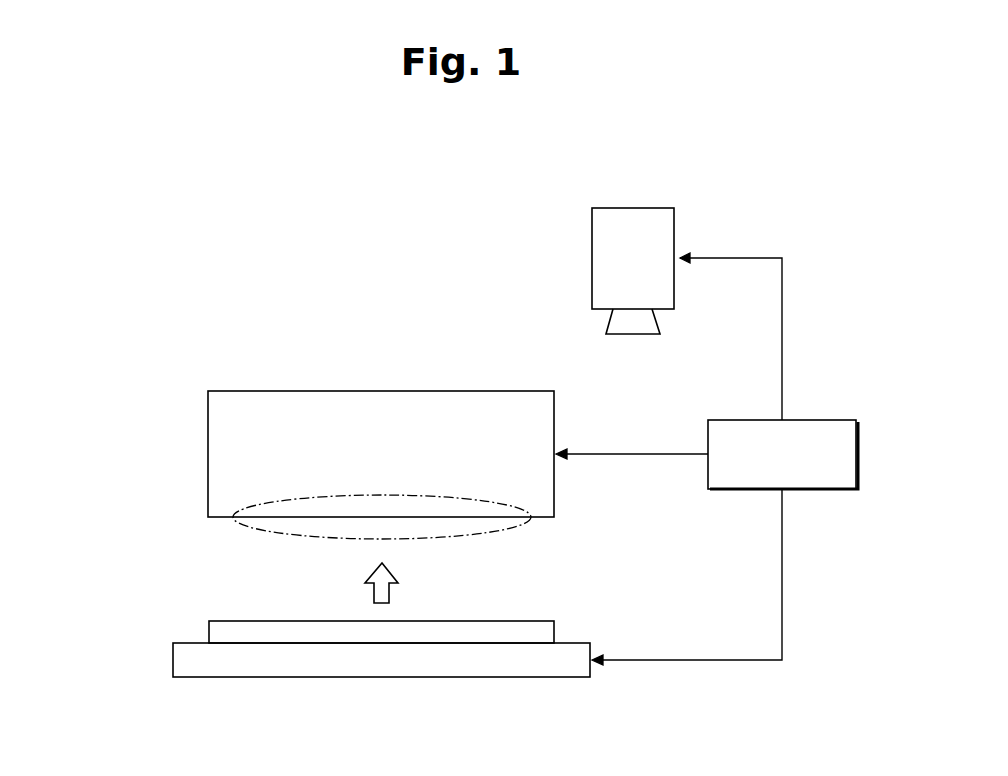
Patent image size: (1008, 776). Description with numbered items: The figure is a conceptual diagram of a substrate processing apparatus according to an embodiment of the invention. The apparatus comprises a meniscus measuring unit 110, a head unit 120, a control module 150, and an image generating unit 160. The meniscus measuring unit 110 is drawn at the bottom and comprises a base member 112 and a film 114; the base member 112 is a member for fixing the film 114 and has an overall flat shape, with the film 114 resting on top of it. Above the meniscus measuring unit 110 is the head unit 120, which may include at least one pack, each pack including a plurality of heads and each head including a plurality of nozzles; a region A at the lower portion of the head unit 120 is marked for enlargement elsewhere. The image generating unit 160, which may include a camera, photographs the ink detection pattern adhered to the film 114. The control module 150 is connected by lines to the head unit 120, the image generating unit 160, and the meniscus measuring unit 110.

The meniscus measuring unit 110 is at (322, 646).
The base member 112 is at (180, 667).
The film 114 is at (228, 632).
The head unit 120 is at (268, 391).
The control module 150 is at (832, 418).
The image generating unit 160 is at (652, 207).
The region A is at (262, 531).